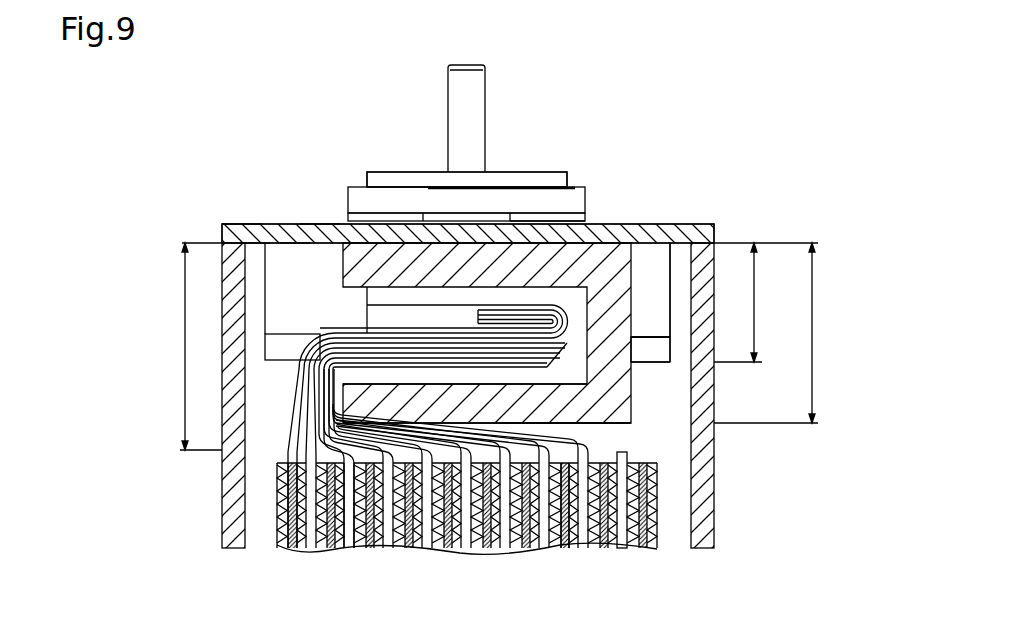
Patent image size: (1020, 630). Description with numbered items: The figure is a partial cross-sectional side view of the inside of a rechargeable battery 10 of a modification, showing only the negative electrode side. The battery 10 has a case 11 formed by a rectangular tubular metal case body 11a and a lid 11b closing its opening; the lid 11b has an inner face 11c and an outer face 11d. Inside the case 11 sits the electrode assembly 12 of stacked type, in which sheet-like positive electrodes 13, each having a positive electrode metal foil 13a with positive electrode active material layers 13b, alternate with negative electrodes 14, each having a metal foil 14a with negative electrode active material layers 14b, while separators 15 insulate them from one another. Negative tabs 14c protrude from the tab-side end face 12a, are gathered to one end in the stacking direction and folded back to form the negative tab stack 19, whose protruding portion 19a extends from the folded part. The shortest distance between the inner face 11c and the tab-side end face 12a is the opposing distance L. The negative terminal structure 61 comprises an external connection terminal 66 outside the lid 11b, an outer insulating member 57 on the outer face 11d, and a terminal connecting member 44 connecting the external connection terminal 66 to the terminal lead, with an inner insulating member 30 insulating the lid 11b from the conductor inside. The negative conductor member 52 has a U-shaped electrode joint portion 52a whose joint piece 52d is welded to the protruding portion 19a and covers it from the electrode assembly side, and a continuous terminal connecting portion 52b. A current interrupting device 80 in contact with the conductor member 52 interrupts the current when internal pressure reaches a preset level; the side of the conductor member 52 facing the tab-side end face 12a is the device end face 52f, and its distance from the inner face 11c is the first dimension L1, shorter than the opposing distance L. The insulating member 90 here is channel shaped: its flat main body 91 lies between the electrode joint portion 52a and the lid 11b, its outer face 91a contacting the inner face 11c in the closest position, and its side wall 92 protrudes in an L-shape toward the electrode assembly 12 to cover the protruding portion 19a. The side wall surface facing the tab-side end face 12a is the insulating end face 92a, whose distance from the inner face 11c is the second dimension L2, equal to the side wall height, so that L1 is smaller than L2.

The rechargeable battery 10 is at (689, 118).
The case 11 is at (276, 153).
The case body 11a is at (253, 246).
The lid 11b is at (240, 223).
The inner face of the lid 11c is at (293, 246).
The outer face of the lid 11d is at (320, 222).
The electrode assembly 12 is at (662, 483).
The tab-side end face 12a is at (633, 460).
The positive electrode 13 is at (547, 553).
The positive electrode metal foil 13a is at (562, 555).
The positive electrode active material layers 13b is at (555, 553).
The negative electrode 14 is at (278, 480).
The metal foil 14a is at (292, 536).
The negative electrode active material layers 14b is at (303, 537).
The negative tab 14c is at (588, 436).
The separator 15 is at (350, 545).
The negative tab stack 19 is at (321, 331).
The protruding portion 19a is at (382, 334).
The inner insulating member 30 is at (680, 258).
The terminal connecting member 44 is at (540, 172).
The negative conductor member 52 is at (506, 296).
The electrode joint portion 52a is at (367, 298).
The terminal connecting portion 52b is at (273, 360).
The joint piece 52d is at (430, 386).
The device end face 52f is at (650, 363).
The outer insulating member 57 is at (583, 188).
The negative terminal structure 61 is at (506, 56).
The external connection terminal 66 is at (467, 63).
The current interrupting device 80 is at (292, 372).
The insulating member 90 is at (663, 258).
The main body 91 is at (457, 240).
The outer face 91a is at (600, 240).
The side wall 92 is at (637, 283).
The insulating end face 92a is at (540, 426).
The opposing distance L is at (183, 351).
The first dimension L1 is at (757, 301).
The second dimension L2 is at (814, 323).